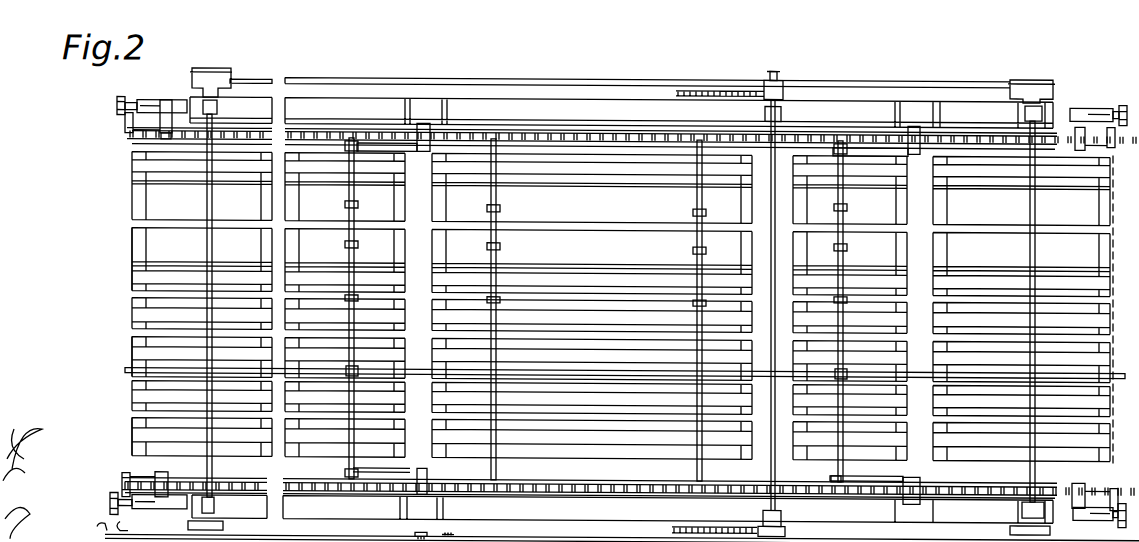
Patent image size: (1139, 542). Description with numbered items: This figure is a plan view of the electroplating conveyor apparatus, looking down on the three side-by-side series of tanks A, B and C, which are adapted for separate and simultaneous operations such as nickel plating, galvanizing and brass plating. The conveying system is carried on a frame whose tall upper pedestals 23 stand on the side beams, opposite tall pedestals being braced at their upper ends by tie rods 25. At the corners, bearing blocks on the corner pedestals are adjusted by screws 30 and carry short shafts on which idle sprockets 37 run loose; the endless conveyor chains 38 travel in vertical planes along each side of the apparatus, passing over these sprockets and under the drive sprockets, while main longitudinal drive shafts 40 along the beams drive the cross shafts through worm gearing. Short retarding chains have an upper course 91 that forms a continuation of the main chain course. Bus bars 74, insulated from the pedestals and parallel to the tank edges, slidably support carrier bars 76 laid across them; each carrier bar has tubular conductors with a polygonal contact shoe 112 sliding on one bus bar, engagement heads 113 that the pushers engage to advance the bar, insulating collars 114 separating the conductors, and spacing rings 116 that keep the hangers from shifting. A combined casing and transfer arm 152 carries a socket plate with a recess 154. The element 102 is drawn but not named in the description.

The upper pedestal 23 is at (221, 108).
The tie rod 25 is at (214, 248).
The screw 30 is at (147, 89).
The idle sprocket 37 is at (158, 137).
The endless conveyor chain 38 is at (600, 134).
The main longitudinal drive shaft 40 is at (556, 81).
The bus bar 74 is at (600, 372).
The carrier bar 76 is at (498, 256).
The upper course of short chain 91 is at (716, 90).
The angle bracket 102 is at (120, 118).
The contact shoe 112 is at (346, 366).
The engagement head 113 is at (100, 527).
The insulating collar 114 is at (440, 534).
The spacing ring 116 is at (818, 532).
The combined casing and transfer arm 152 is at (905, 152).
The recess 154 is at (345, 147).
The series of tanks A is at (131, 436).
The series of tanks B is at (131, 353).
The series of tanks C is at (131, 252).